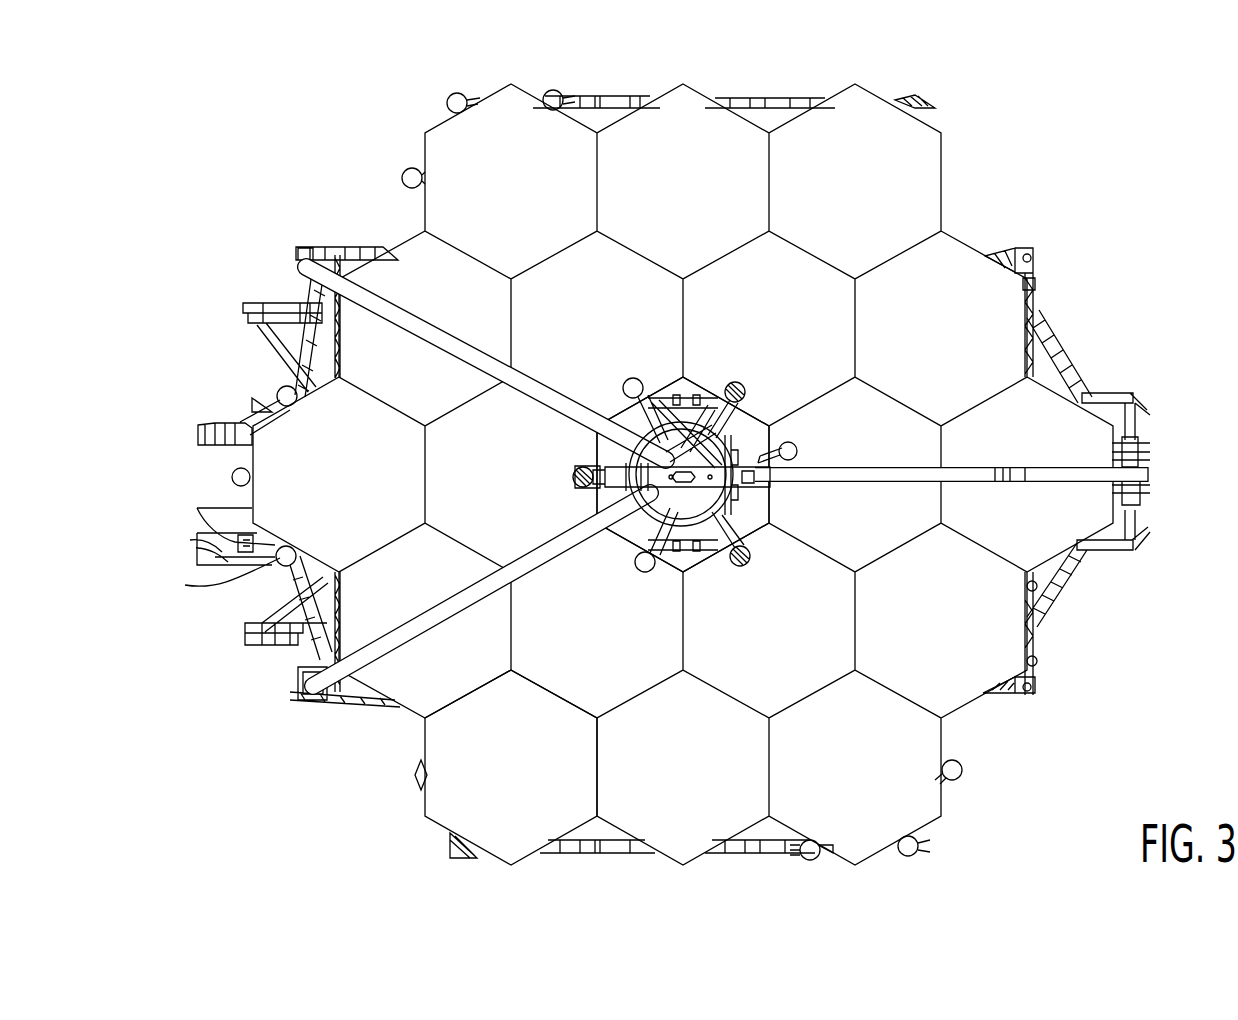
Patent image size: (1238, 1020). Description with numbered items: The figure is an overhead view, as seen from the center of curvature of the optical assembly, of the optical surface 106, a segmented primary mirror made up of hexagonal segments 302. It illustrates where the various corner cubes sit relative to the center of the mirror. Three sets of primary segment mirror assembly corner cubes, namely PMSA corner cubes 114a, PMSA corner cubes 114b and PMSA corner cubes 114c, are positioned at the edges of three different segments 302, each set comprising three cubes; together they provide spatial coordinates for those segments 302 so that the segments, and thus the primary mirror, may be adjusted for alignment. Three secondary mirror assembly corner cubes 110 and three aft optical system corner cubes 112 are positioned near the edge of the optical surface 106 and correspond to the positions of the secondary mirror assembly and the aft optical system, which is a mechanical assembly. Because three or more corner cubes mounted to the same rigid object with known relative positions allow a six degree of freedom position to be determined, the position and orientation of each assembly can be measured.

The optical surface 106 is at (387, 733).
The secondary mirror assembly (SMA) corner cubes 110 is at (740, 383).
The aft optical system (AOS) corner cubes 112 is at (797, 445).
The PMSA corner cubes 114a is at (545, 93).
The PMSA corner cubes 114b is at (278, 393).
The PMSA corner cubes 114c is at (823, 862).
The segments 302 is at (443, 807).